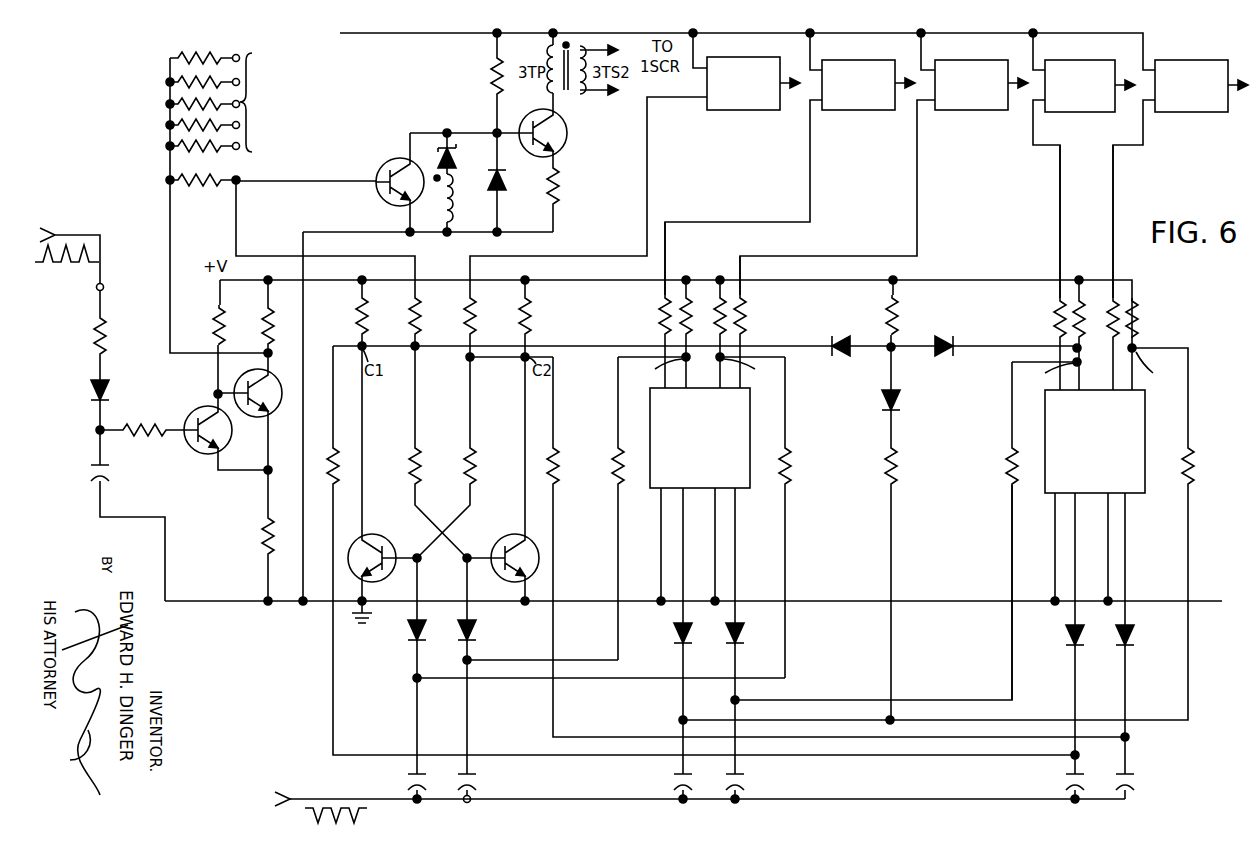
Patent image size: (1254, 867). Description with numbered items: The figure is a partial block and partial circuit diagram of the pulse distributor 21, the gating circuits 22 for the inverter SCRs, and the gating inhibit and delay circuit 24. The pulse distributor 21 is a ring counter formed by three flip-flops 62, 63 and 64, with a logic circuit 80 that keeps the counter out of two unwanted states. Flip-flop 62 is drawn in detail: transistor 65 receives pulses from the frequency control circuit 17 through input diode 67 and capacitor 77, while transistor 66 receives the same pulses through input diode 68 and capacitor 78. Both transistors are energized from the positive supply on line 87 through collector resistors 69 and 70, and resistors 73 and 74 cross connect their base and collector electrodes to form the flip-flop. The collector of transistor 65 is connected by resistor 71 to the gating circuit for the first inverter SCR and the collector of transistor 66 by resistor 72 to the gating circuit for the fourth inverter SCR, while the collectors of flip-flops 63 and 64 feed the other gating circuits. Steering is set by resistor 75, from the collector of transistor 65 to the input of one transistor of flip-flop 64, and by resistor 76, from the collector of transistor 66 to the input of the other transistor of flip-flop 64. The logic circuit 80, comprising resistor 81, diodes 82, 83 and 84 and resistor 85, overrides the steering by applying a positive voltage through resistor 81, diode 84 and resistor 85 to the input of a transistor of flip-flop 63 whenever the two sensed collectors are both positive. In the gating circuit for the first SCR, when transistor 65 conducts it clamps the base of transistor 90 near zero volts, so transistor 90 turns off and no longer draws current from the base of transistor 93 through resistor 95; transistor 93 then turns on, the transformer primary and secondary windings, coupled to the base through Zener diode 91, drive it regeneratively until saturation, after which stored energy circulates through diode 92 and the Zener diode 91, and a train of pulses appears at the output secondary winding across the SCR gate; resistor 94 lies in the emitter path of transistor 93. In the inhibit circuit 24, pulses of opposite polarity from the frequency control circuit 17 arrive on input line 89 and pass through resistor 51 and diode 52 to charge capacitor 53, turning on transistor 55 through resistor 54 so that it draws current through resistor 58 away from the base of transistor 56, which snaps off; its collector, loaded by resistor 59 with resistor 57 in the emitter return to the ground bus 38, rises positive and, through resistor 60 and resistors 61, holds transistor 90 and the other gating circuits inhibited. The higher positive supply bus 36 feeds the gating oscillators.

The frequency control circuit 17 is at (37, 230).
The pulse distributor 21 is at (776, 560).
The gating circuits 22 is at (866, 157).
The gating inhibit and delay circuit 24 is at (162, 386).
The positive supply bus 36 is at (413, 35).
The common ground bus 38 is at (820, 604).
The resistor 51 is at (107, 348).
The diode 52 is at (90, 392).
The capacitor 53 is at (108, 472).
The resistor 54 is at (140, 426).
The transistor 55 is at (197, 410).
The transistor 56 is at (278, 412).
The resistor 57 is at (260, 533).
The resistor 58 is at (214, 316).
The resistor 59 is at (265, 316).
The resistor 60 is at (214, 186).
The resistors 61 is at (170, 146).
The flip-flop 62 is at (457, 441).
The flip-flop 63 is at (652, 490).
The flip-flop 64 is at (1047, 495).
The transistor 65 is at (385, 545).
The transistor 66 is at (500, 545).
The input diode 67 is at (408, 634).
The input diode 68 is at (459, 634).
The resistor 69 is at (355, 318).
The resistor 70 is at (531, 312).
The resistor 71 is at (412, 310).
The resistor 72 is at (467, 310).
The resistor 73 is at (410, 470).
The resistor 74 is at (465, 470).
The resistor 75 is at (330, 483).
The resistor 76 is at (557, 460).
The capacitor 77 is at (408, 780).
The capacitor 78 is at (477, 780).
The logic circuit 80 is at (848, 329).
The resistor 81 is at (897, 312).
The diode 82 is at (845, 357).
The diode 83 is at (943, 357).
The diode 84 is at (897, 406).
The resistor 85 is at (897, 478).
The line 87 is at (594, 282).
The pulse input line 89 is at (328, 797).
The transistor 90 is at (383, 192).
The Zener diode 91 is at (453, 150).
The diode 92 is at (503, 186).
The transistor 93 is at (561, 146).
The resistor 94 is at (562, 192).
The resistor 95 is at (494, 70).